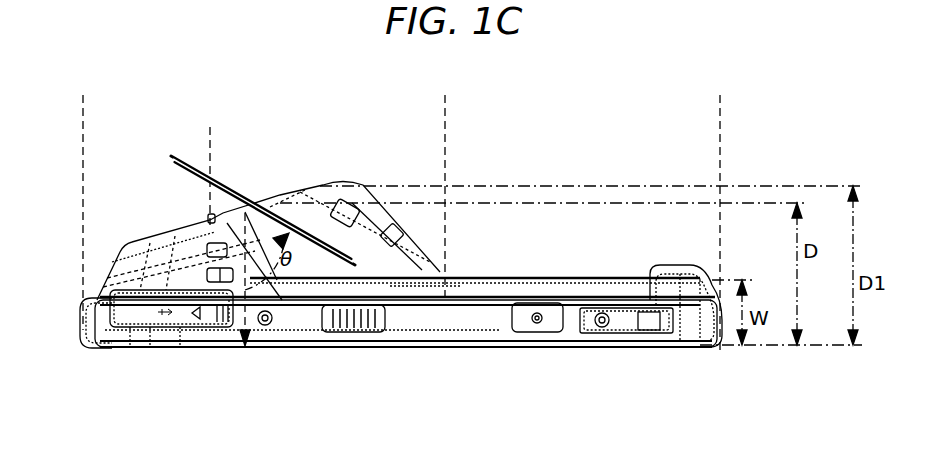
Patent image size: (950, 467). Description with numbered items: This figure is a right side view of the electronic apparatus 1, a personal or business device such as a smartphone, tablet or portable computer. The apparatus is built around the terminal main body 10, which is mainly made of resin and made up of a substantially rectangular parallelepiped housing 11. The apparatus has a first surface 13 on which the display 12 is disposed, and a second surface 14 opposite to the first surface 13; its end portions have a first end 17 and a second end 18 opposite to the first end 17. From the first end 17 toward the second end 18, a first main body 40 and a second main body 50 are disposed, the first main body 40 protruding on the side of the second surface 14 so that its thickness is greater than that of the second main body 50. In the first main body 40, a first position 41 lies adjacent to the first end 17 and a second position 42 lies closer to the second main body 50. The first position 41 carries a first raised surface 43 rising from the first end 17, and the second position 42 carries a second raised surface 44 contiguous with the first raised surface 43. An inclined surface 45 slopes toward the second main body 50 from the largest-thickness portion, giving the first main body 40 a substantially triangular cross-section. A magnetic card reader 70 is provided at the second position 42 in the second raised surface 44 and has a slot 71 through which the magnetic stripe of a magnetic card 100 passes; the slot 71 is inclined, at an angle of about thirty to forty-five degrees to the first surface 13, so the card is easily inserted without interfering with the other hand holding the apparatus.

The electronic apparatus 1 is at (529, 262).
The terminal main body 10 is at (570, 330).
The housing 11 is at (461, 330).
The display 12 is at (330, 345).
The first surface 13 is at (385, 345).
The second surface 14 is at (573, 280).
The first end 17 is at (88, 345).
The second end 18 is at (720, 336).
The first main body 40 is at (433, 103).
The first position 41 is at (198, 143).
The second position 42 is at (222, 143).
The first raised surface 43 is at (150, 244).
The second raised surface 44 is at (297, 195).
The inclined surface 45 is at (403, 238).
The second main body 50 is at (457, 103).
The magnetic card reader 70 is at (272, 208).
The slot 71 is at (247, 212).
The magnetic card 100 is at (175, 167).